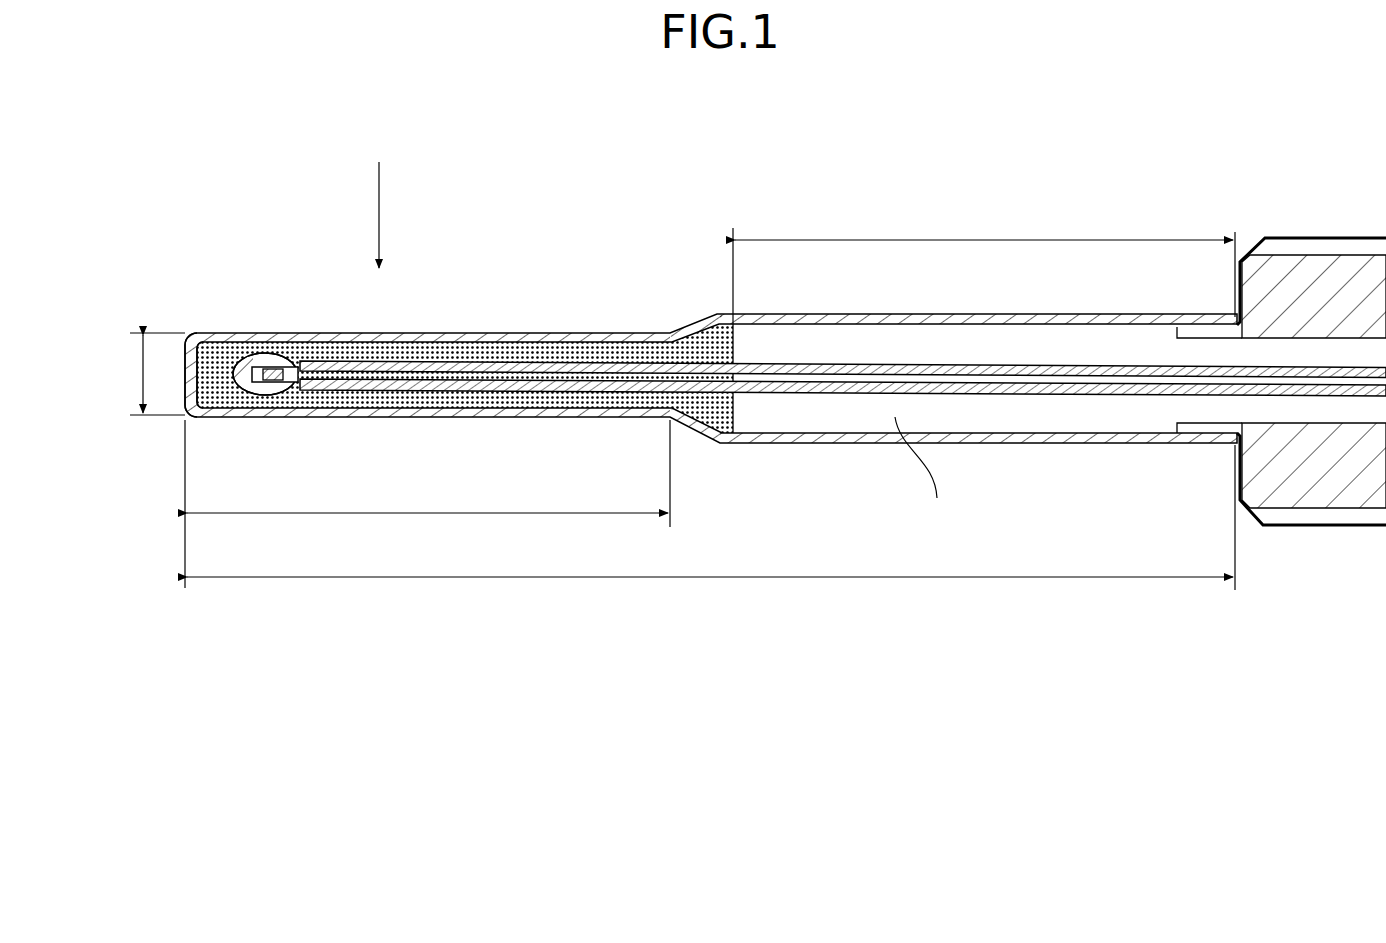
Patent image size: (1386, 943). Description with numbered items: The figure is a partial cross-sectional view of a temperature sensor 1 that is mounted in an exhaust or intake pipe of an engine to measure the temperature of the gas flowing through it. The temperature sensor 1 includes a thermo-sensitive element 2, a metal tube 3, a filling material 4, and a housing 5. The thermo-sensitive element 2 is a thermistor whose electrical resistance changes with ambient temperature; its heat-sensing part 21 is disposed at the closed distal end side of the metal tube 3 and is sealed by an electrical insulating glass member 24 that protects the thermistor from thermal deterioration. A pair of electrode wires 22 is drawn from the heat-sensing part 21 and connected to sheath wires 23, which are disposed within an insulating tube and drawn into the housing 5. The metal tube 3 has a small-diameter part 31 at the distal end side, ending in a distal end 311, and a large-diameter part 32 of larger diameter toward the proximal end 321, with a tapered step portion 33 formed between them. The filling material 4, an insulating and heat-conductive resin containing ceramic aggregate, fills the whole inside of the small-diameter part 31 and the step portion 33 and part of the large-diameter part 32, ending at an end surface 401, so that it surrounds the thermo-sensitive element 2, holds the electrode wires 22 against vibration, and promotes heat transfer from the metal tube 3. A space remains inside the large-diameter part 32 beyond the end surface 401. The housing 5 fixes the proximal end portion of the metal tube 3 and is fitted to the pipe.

The temperature sensor 1 is at (1143, 176).
The thermo-sensitive element 2 is at (261, 346).
The heat-sensing part 21 is at (268, 394).
The electrode wires 22 is at (318, 362).
The sheath wires 23 is at (440, 345).
The electrical insulating glass member 24 is at (246, 349).
The metal tube 3 is at (1140, 448).
The small-diameter part 31 is at (580, 340).
The distal end 311 is at (186, 374).
The large-diameter part 32 is at (1032, 440).
The proximal end 321 is at (1240, 561).
The tapered step portion 33 is at (695, 327).
The filling material 4 is at (520, 355).
The end surface 401 is at (733, 412).
The housing 5 is at (1272, 265).